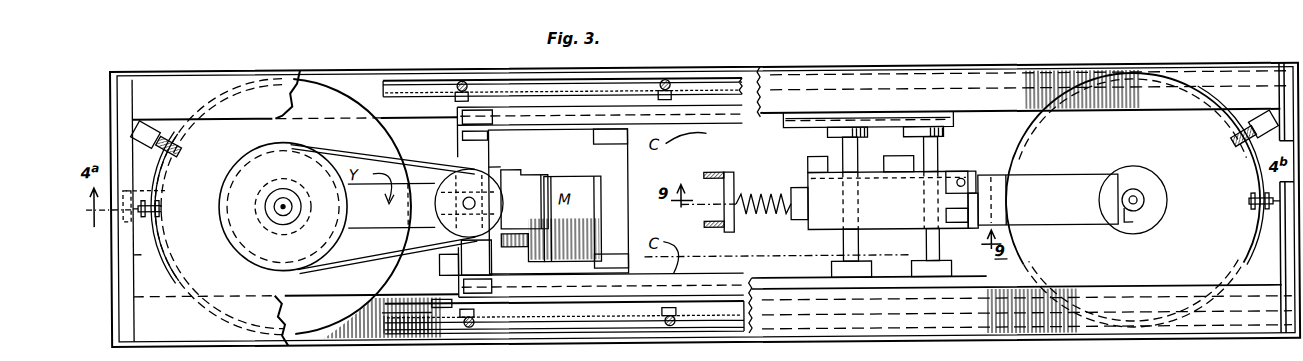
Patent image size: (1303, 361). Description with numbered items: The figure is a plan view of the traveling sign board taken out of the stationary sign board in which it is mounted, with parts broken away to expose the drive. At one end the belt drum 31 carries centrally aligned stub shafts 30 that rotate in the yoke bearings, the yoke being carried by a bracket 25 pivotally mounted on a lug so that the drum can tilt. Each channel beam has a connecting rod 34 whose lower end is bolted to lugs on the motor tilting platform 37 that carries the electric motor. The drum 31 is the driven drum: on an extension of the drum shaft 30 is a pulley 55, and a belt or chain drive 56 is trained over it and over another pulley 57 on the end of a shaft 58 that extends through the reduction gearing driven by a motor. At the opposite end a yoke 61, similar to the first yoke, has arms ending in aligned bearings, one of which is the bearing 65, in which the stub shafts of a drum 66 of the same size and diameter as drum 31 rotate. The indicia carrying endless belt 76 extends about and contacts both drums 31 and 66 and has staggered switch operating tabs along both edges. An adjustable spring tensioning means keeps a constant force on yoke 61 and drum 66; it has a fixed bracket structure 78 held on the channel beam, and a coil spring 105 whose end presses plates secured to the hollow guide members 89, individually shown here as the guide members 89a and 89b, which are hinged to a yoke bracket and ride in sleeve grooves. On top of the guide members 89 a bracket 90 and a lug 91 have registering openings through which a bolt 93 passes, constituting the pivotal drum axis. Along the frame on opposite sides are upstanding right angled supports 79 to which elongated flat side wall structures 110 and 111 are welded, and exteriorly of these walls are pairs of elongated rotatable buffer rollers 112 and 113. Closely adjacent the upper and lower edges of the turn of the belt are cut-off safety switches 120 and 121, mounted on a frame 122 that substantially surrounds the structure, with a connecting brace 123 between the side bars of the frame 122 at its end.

The belt drum 31 is at (350, 103).
The stub shafts 30 is at (283, 222).
The pulley 55 is at (340, 248).
The belt or chain drive 56 is at (418, 166).
The shaft 58 is at (484, 203).
The pulley 57 is at (492, 182).
The motor tilting platform 37 is at (584, 170).
The connecting rod 34 is at (630, 140).
The bracket 25 is at (457, 131).
The side wall structure 111 is at (456, 287).
The indicia carrying endless belt 76 is at (380, 312).
The upstanding right angled supports 79 is at (459, 86).
The side wall structure 110 is at (507, 97).
The buffer rollers 113 is at (648, 93).
The buffer rollers 112 is at (481, 328).
The cut-off safety switch 120 is at (185, 138).
The cut-off safety switch 121 is at (160, 213).
The frame 122 is at (135, 258).
The connecting brace 123 is at (145, 200).
The fixed bracket structure 78 is at (733, 168).
The coil spring 105 is at (766, 196).
The hollow guide members 89 is at (877, 181).
The upper post 89a is at (842, 153).
The mounting plate 89b is at (955, 141).
The bracket 90 is at (945, 207).
The lug 91 is at (938, 172).
The bolt 93 is at (958, 178).
The yoke 61 is at (1073, 180).
The bearing 65 is at (1137, 238).
The drum 66 is at (1145, 162).